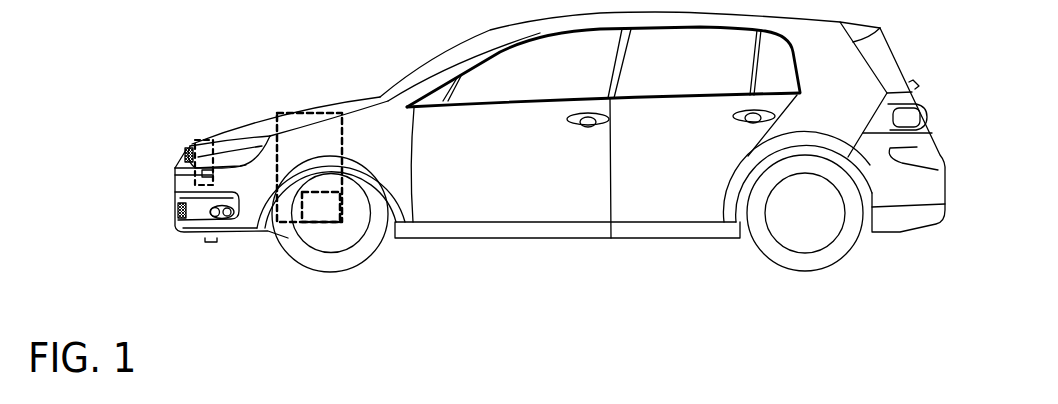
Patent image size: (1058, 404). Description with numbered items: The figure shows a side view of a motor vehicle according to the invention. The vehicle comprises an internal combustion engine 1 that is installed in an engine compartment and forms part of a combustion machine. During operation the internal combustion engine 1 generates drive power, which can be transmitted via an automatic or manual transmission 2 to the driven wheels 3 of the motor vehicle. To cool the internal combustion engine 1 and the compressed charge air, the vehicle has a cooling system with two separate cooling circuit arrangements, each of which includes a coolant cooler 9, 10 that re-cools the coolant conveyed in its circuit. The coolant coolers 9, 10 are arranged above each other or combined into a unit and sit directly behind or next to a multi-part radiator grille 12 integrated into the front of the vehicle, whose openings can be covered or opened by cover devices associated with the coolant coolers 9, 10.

The internal combustion engine 1 is at (306, 130).
The transmission 2 is at (314, 210).
The driven wheels 3 is at (356, 250).
The coolant cooler 9 is at (200, 154).
The coolant cooler 10 is at (200, 218).
The radiator grille 12 is at (179, 208).